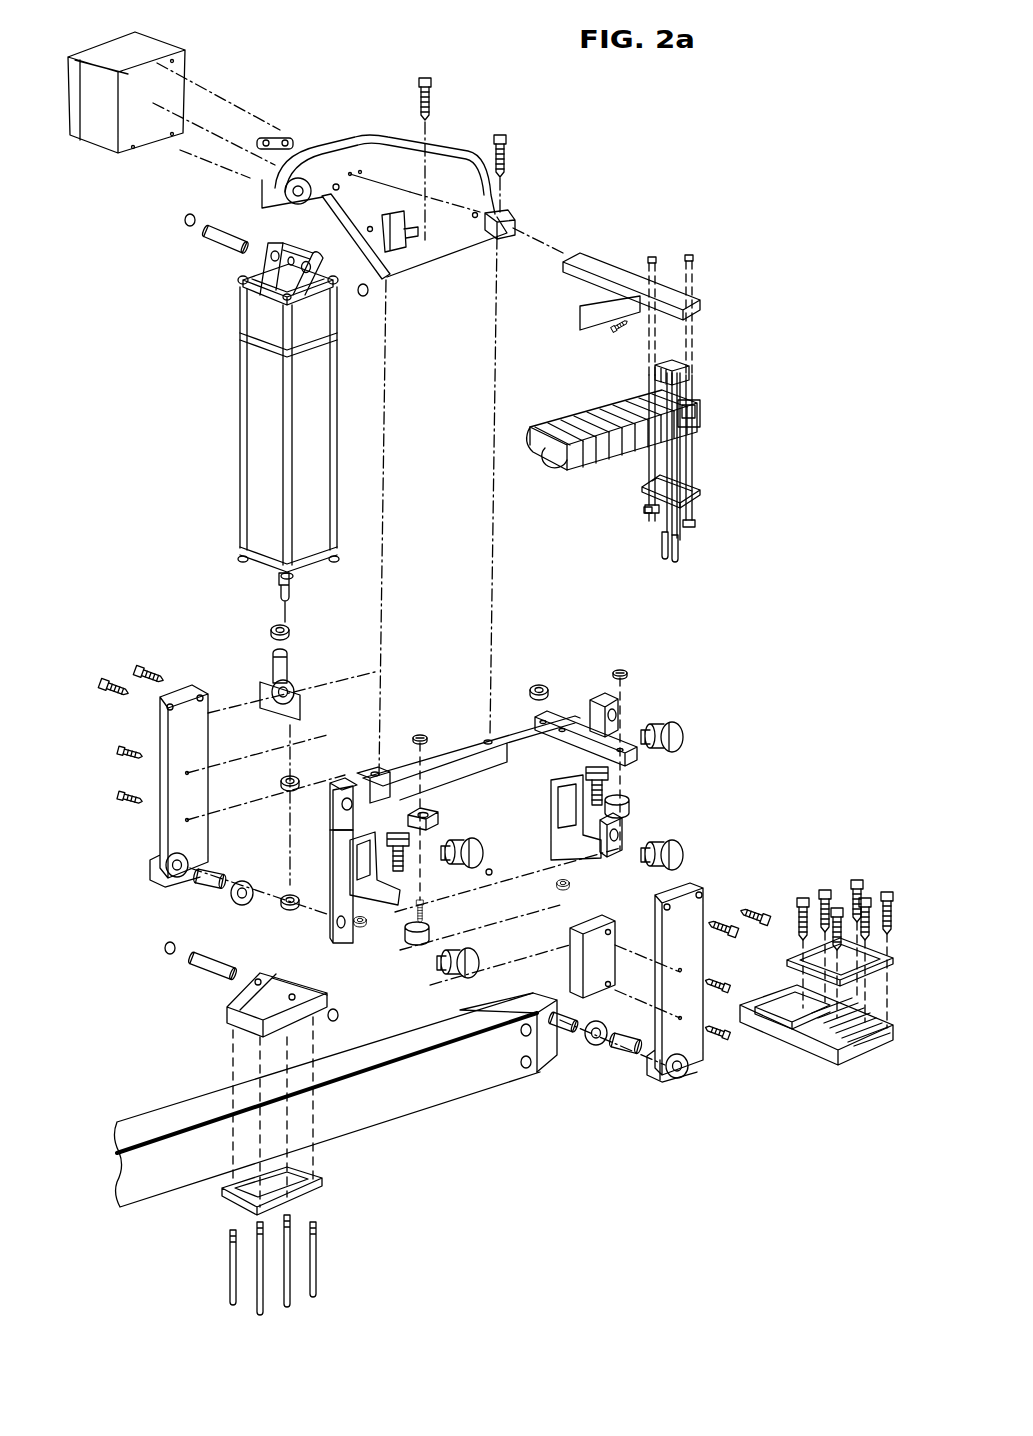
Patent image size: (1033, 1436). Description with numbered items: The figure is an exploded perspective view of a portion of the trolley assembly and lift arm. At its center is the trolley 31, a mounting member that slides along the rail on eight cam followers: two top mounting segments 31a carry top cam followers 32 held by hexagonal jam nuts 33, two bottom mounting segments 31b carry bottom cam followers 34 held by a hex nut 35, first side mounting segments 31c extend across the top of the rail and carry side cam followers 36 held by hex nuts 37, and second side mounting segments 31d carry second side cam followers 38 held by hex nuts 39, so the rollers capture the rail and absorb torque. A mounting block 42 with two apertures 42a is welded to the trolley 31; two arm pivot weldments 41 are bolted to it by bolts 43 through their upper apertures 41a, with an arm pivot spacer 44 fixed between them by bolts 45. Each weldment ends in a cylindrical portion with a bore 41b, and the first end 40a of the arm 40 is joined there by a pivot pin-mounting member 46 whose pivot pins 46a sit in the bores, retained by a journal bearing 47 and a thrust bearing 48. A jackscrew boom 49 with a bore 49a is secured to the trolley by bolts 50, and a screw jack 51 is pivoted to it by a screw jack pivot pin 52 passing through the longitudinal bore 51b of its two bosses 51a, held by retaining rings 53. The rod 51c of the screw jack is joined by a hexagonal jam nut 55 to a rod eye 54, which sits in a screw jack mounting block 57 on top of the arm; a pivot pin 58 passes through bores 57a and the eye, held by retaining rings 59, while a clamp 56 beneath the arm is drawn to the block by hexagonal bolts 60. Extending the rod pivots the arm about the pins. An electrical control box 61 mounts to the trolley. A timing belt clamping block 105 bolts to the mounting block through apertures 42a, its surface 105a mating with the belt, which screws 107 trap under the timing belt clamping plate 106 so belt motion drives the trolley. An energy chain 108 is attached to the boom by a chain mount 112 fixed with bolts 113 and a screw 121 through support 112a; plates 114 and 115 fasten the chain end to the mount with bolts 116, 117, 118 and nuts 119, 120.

The trolley 31 is at (465, 748).
The top mounting segments 31a is at (332, 785).
The bottom mounting segments 31b is at (327, 934).
The first side mounting segments 31c is at (388, 780).
The second side mounting segments 31d is at (380, 905).
The top cam followers 32 is at (470, 840).
The hexagonal jam nuts 33 is at (283, 779).
The bottom cam followers 34 is at (480, 963).
The hex nut 35 is at (280, 895).
The side cam followers 36 is at (430, 936).
The hex nuts 37 is at (420, 734).
The second side cam followers 38 is at (388, 840).
The hex nuts 39 is at (358, 927).
The arm 40 is at (183, 1100).
The first end of the arm 40a is at (483, 1073).
The arm pivot weldments 41 is at (160, 833).
The upper apertures 41a is at (203, 698).
The bore 41b is at (177, 870).
The mounting block 42 is at (425, 910).
The apertures 42a is at (490, 868).
The bolts 43 is at (112, 692).
The arm pivot spacer 44 is at (606, 970).
The bolts 45 is at (122, 754).
The pivot pin-mounting member 46 is at (545, 1043).
The pivot pins 46a is at (507, 995).
The journal bearing 47 is at (212, 876).
The thrust bearing 48 is at (243, 906).
The jackscrew boom 49 is at (450, 147).
The bore 49a is at (299, 205).
The bolts 50 is at (425, 76).
The screw jack 51 is at (235, 440).
The bosses 51a is at (258, 266).
The longitudinal bore 51b is at (306, 262).
The rod 51c is at (292, 602).
The screw jack pivot pin 52 is at (230, 228).
The retaining rings 53 is at (187, 224).
The rod eye 54 is at (270, 664).
The hexagonal jam nut 55 is at (271, 625).
The clamp 56 is at (326, 1182).
The screw jack mounting block 57 is at (226, 1019).
The bores 57a is at (252, 985).
The pivot pin 58 is at (208, 957).
The retaining rings 59 is at (166, 954).
The hexagonal bolts 60 is at (229, 1253).
The electrical control box 61 is at (188, 48).
The timing belt clamping block 105 is at (840, 1058).
The surface 105a is at (820, 1038).
The timing belt clamping plate 106 is at (800, 960).
The screws 107 is at (830, 889).
The energy chain 108 is at (577, 463).
The chain mount 112 is at (623, 270).
The support 112a is at (607, 300).
The bolts 113 is at (283, 132).
The plate 114 is at (697, 368).
The plate 115 is at (702, 493).
The bolt 116 is at (701, 394).
The bolt 117 is at (701, 432).
The bolt 118 is at (683, 550).
The nut 119 is at (645, 513).
The nut 120 is at (694, 261).
The screw 121 is at (614, 338).